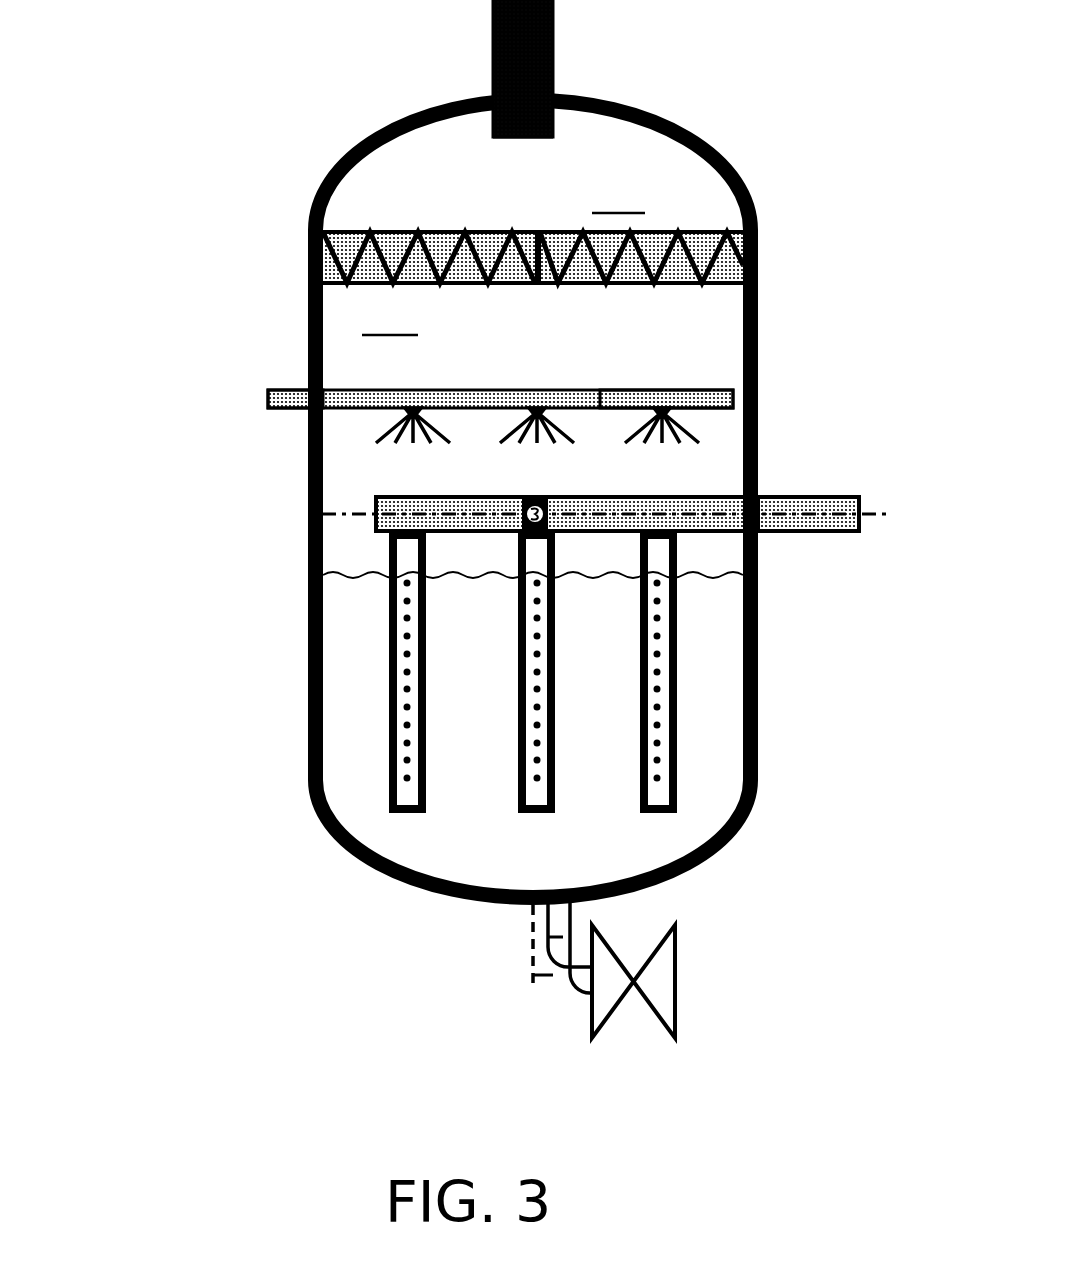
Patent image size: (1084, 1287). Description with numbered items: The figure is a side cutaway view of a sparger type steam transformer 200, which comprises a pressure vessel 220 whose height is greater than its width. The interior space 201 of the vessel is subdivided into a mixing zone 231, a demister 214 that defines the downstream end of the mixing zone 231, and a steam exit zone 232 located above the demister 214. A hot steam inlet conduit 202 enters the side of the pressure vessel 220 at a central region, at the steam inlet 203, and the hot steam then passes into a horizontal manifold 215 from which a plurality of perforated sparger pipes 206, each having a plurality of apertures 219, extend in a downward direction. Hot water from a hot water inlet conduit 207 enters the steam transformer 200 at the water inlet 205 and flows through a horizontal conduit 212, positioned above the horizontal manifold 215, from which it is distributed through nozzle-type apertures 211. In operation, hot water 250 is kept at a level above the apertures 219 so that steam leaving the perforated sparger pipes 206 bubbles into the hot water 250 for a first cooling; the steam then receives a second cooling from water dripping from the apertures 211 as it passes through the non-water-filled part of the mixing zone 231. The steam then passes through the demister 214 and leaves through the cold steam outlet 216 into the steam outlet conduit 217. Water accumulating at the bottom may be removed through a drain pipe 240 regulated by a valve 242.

The steam transformer 200 is at (296, 173).
The interior space 201 is at (758, 310).
The hot steam inlet conduit 202 is at (828, 533).
The steam inlet 203 is at (758, 498).
The water inlet 205 is at (308, 389).
The perforated sparger pipes 206 is at (513, 563).
The hot water inlet conduit 207 is at (268, 398).
The apertures 211 is at (527, 390).
The horizontal conduit 212 is at (743, 347).
The demister 214 is at (308, 255).
The horizontal manifold 215 is at (612, 512).
The cold steam outlet 216 is at (518, 138).
The steam outlet conduit 217 is at (553, 50).
The apertures 219 is at (535, 720).
The pressure vessel 220 is at (308, 471).
The mixing zone 231 is at (390, 319).
The steam exit zone 232 is at (620, 197).
The drain pipe 240 is at (548, 975).
The valve 242 is at (673, 1000).
The hot water 250 is at (541, 852).